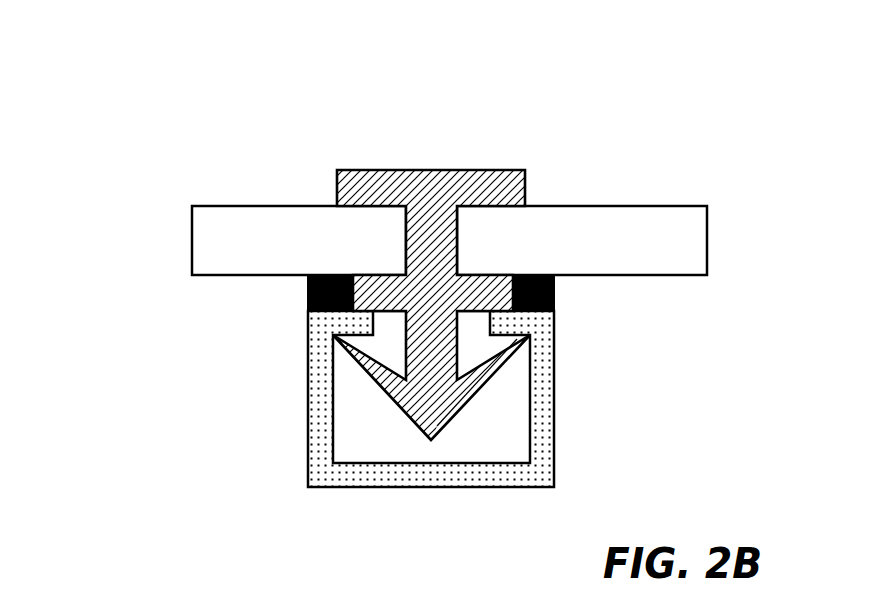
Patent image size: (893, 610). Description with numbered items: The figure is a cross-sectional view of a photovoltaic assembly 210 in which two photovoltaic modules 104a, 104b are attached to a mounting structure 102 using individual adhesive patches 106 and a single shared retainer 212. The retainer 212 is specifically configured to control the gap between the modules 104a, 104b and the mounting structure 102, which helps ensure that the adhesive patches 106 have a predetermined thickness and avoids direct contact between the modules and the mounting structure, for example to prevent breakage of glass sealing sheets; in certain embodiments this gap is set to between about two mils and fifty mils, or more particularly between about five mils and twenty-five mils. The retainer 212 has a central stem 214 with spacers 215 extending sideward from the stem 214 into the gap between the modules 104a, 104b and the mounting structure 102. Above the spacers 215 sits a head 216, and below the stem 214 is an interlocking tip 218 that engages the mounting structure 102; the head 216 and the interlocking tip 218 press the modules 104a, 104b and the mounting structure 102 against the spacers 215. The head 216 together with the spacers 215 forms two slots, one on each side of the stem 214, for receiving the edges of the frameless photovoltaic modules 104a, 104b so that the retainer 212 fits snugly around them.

The photovoltaic assembly 210 is at (199, 148).
The retainer 212 is at (425, 168).
The head 216 is at (497, 190).
The photovoltaic module 104a is at (190, 242).
The photovoltaic module 104b is at (707, 240).
The seal 106 is at (308, 295).
The spacer 215 is at (554, 303).
The stem 214 is at (438, 340).
The interlocking tip 218 is at (447, 402).
The mounting structure 102 is at (308, 430).